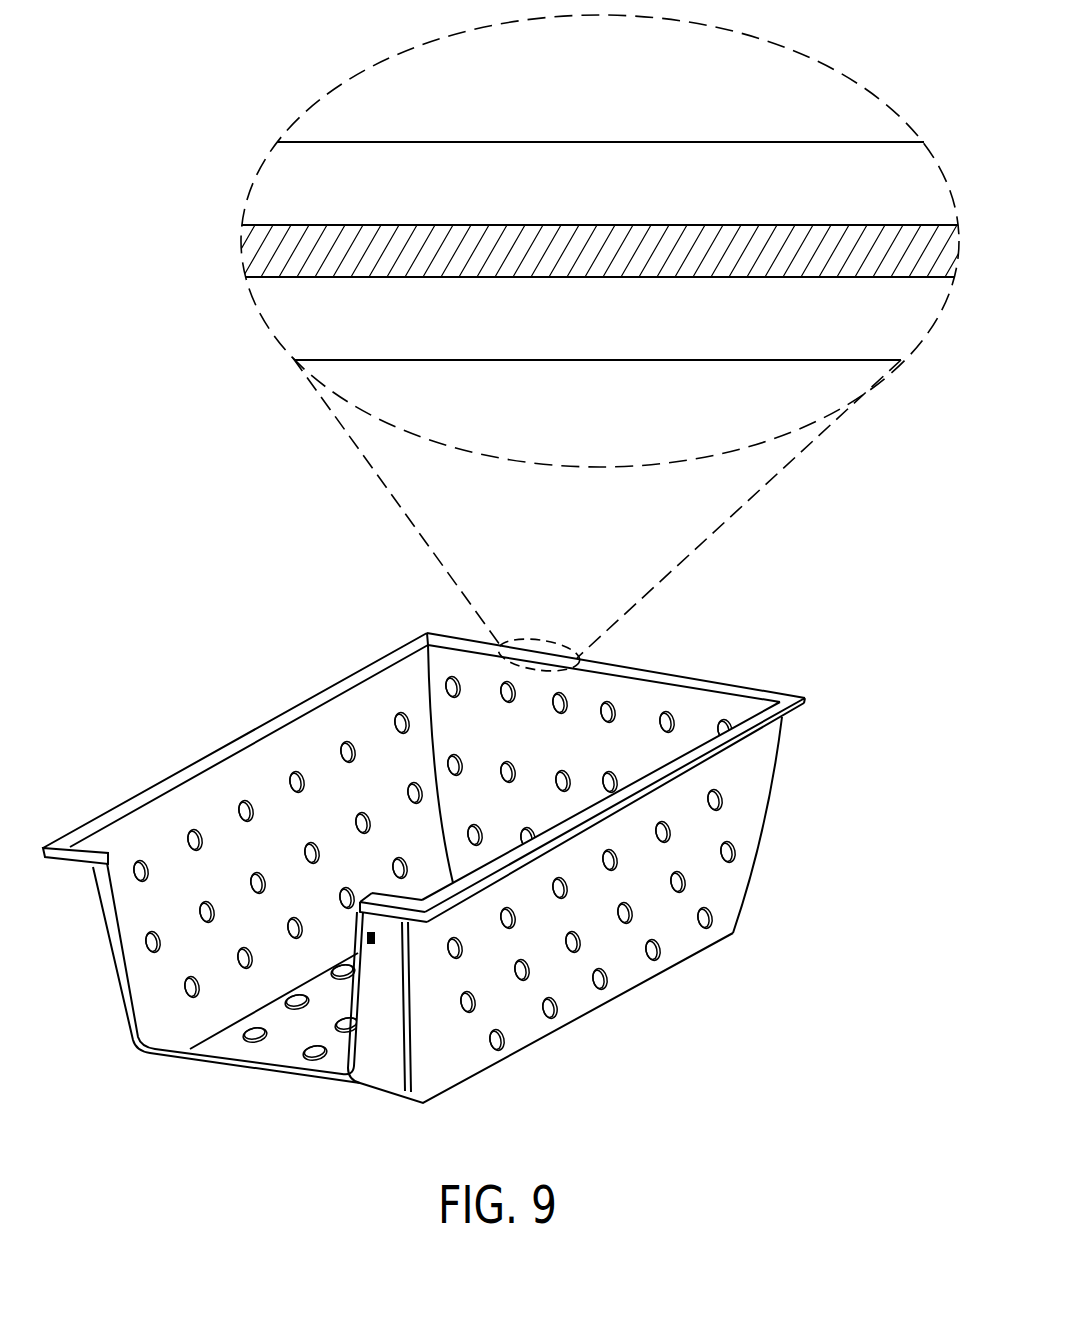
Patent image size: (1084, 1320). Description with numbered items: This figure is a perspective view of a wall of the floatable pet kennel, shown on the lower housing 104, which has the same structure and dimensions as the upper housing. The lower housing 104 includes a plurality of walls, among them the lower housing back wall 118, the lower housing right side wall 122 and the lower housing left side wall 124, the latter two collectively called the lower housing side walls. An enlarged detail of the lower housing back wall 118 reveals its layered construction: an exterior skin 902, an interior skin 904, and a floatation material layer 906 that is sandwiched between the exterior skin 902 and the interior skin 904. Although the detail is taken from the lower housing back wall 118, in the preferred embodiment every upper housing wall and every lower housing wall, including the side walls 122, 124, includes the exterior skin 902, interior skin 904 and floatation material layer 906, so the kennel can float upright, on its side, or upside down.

The lower housing 104 is at (484, 841).
The lower housing back wall 118 is at (708, 678).
The lower housing right side wall 122 is at (570, 998).
The lower housing left side wall 124 is at (235, 738).
The exterior skin 902 is at (616, 174).
The interior skin 904 is at (599, 317).
The floatation material layer 906 is at (281, 258).